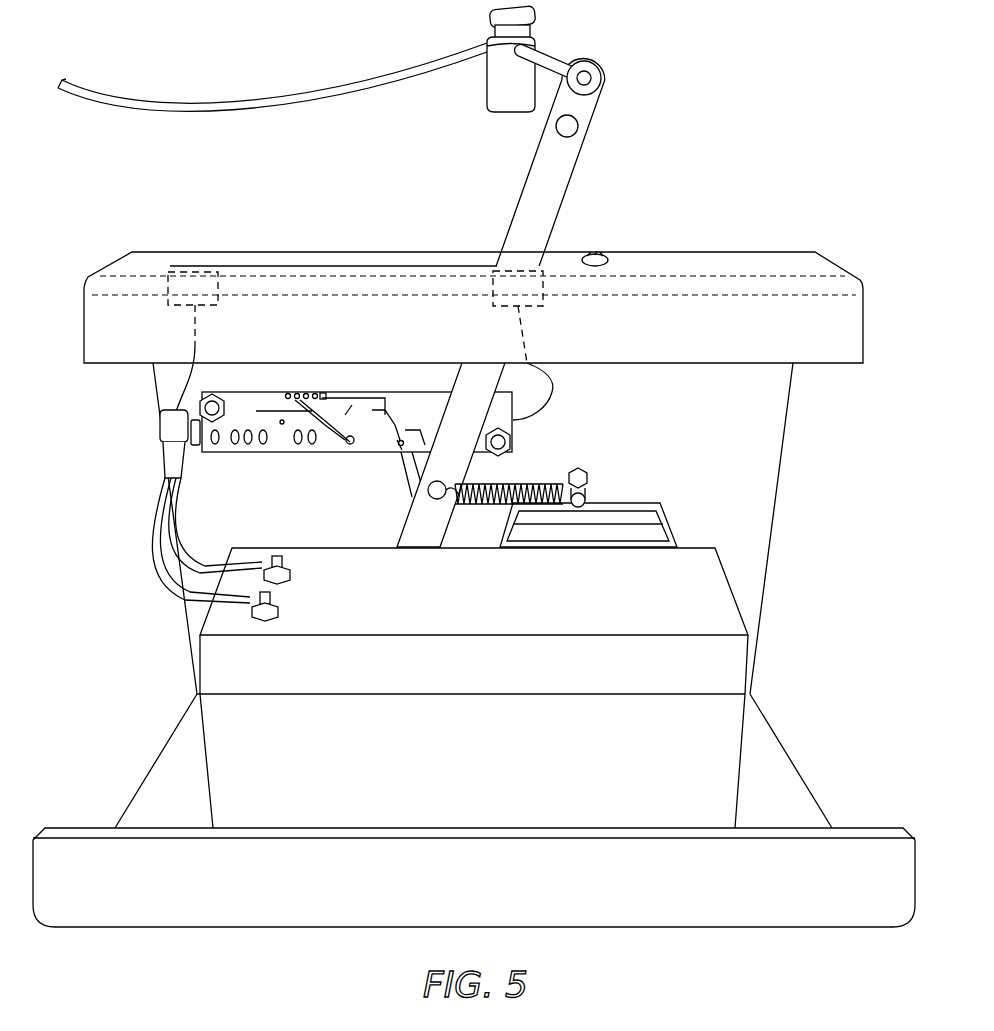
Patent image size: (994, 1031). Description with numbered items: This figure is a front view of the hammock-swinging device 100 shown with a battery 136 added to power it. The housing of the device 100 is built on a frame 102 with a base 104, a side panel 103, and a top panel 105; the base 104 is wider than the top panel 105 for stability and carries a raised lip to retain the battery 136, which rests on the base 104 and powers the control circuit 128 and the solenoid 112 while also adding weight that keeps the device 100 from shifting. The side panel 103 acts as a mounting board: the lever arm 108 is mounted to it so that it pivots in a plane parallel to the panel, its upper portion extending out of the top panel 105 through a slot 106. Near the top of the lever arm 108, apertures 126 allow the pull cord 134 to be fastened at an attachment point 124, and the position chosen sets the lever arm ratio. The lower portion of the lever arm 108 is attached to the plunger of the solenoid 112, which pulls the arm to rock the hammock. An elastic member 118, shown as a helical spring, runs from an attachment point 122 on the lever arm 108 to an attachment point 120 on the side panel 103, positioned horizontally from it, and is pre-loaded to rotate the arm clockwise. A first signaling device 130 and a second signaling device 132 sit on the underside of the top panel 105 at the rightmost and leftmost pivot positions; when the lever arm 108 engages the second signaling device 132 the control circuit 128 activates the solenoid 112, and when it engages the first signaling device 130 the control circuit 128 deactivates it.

The device 100 is at (776, 64).
The frame 102 is at (769, 560).
The side panel 103 is at (745, 424).
The base 104 is at (769, 787).
The top panel 105 is at (738, 263).
The slot 106 is at (306, 264).
The lever arm 108 is at (538, 217).
The solenoid 112 is at (661, 506).
The elastic member 118 is at (532, 482).
The attachment point 120 is at (590, 480).
The attachment point 122 is at (428, 493).
The attachment point 124 is at (607, 80).
The apertures 126 is at (578, 125).
The control circuit 128 is at (243, 446).
The first signaling device 130 is at (531, 286).
The second signaling device 132 is at (189, 284).
The pull cord 134 is at (382, 57).
The battery 136 is at (485, 605).